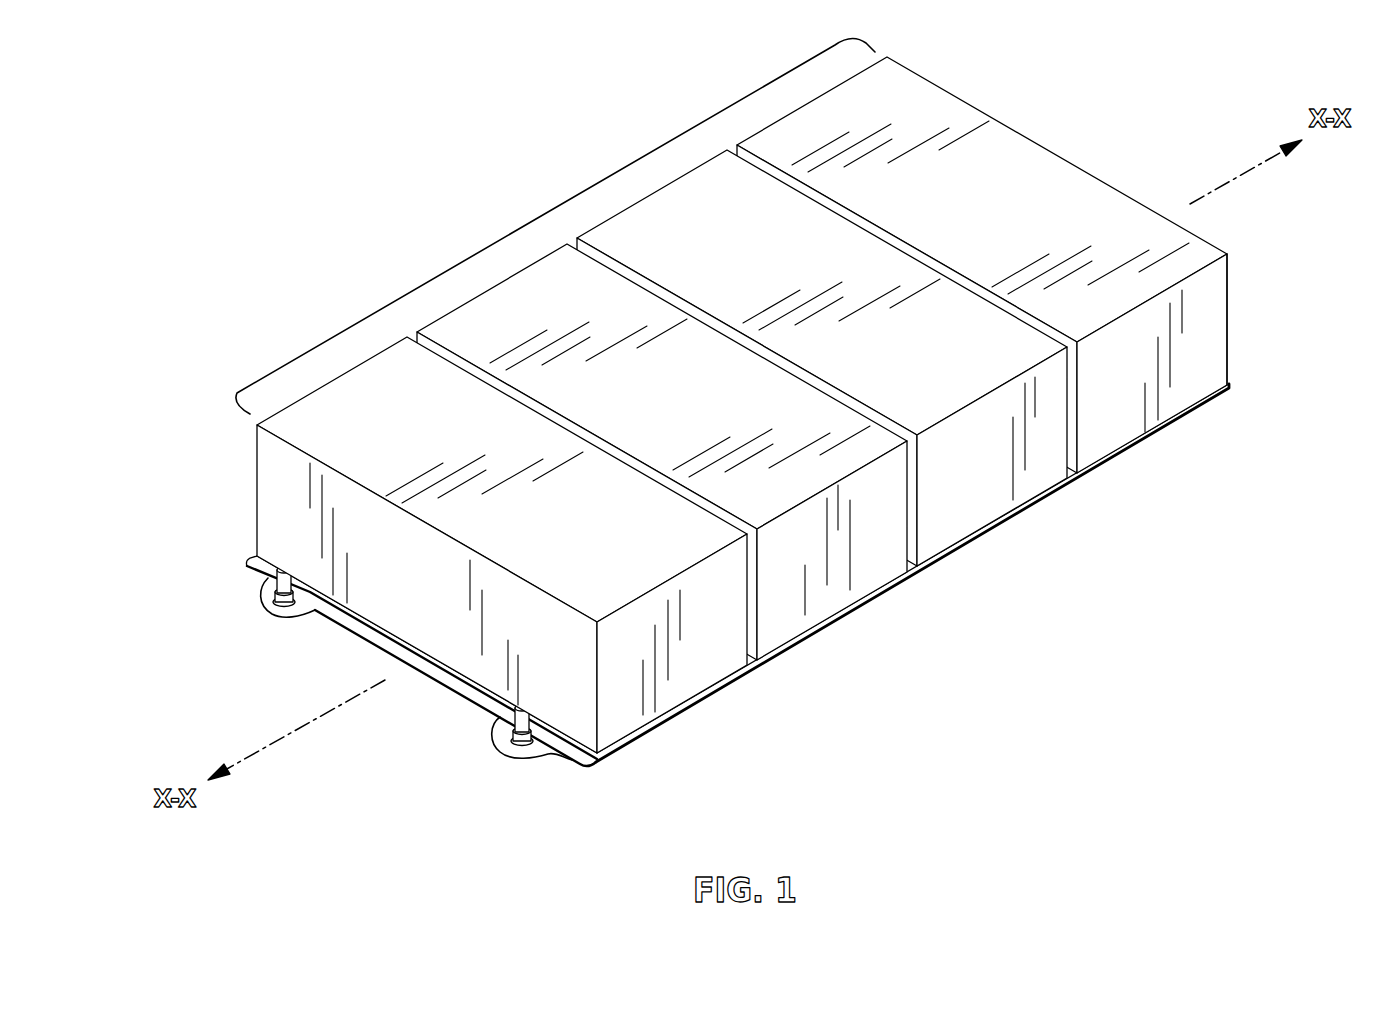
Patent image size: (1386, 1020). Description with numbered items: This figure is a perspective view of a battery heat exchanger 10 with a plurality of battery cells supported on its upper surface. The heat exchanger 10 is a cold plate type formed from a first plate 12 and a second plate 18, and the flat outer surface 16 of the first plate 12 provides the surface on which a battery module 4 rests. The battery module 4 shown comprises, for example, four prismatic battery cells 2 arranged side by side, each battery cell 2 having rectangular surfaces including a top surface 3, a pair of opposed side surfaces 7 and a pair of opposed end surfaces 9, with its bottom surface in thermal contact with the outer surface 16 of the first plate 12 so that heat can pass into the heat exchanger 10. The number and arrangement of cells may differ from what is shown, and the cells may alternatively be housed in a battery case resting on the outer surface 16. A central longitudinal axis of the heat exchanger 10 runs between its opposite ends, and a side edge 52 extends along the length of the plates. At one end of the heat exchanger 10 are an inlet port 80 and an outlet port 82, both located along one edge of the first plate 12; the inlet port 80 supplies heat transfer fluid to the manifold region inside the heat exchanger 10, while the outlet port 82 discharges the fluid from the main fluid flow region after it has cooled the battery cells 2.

The battery cell 2 is at (683, 678).
The top surface 3 is at (1017, 157).
The battery module 4 is at (530, 228).
The side surface 7 is at (1230, 297).
The end surface 9 is at (1197, 345).
The heat exchanger 10 is at (422, 732).
The first plate 12 is at (363, 634).
The outer surface 16 is at (425, 662).
The second plate 18 is at (1205, 410).
The side edge 52 is at (257, 557).
The inlet port 80 is at (521, 745).
The outlet port 82 is at (270, 580).